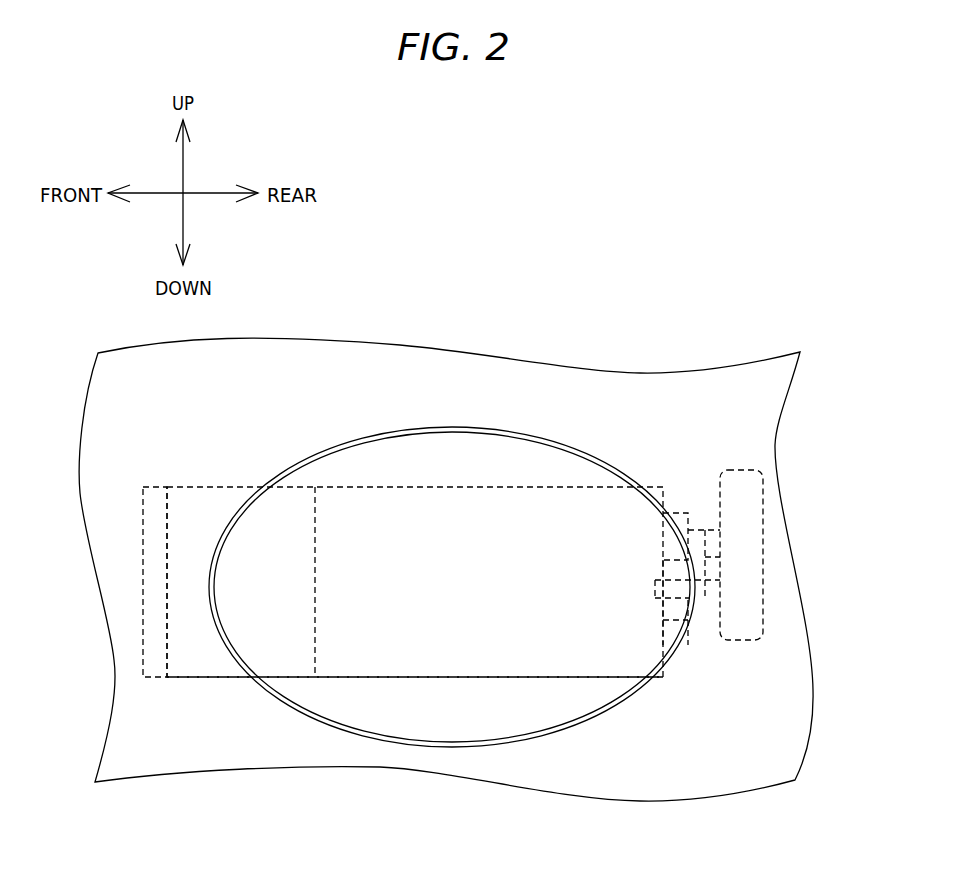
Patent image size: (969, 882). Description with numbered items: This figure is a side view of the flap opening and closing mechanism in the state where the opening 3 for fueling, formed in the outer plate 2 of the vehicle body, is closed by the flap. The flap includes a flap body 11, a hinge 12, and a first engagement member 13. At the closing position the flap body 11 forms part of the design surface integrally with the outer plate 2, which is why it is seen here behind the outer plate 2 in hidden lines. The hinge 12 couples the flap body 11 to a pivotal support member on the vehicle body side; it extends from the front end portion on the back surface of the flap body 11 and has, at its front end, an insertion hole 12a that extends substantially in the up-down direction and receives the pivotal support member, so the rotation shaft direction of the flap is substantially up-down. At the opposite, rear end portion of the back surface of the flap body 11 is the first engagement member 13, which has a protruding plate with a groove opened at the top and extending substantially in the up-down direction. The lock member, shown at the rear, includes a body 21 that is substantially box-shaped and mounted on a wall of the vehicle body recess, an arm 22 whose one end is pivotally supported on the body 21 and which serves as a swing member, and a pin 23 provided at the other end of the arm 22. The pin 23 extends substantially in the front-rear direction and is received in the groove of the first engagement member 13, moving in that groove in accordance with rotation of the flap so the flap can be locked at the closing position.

The outer plate 2 is at (577, 385).
The opening 3 is at (523, 440).
The flap body 11 is at (423, 723).
The hinge 12 is at (195, 678).
The insertion hole 12a is at (155, 668).
The first engagement member 13 is at (683, 653).
The body 21 is at (748, 490).
The arm 22 is at (730, 583).
The pin 23 is at (730, 630).